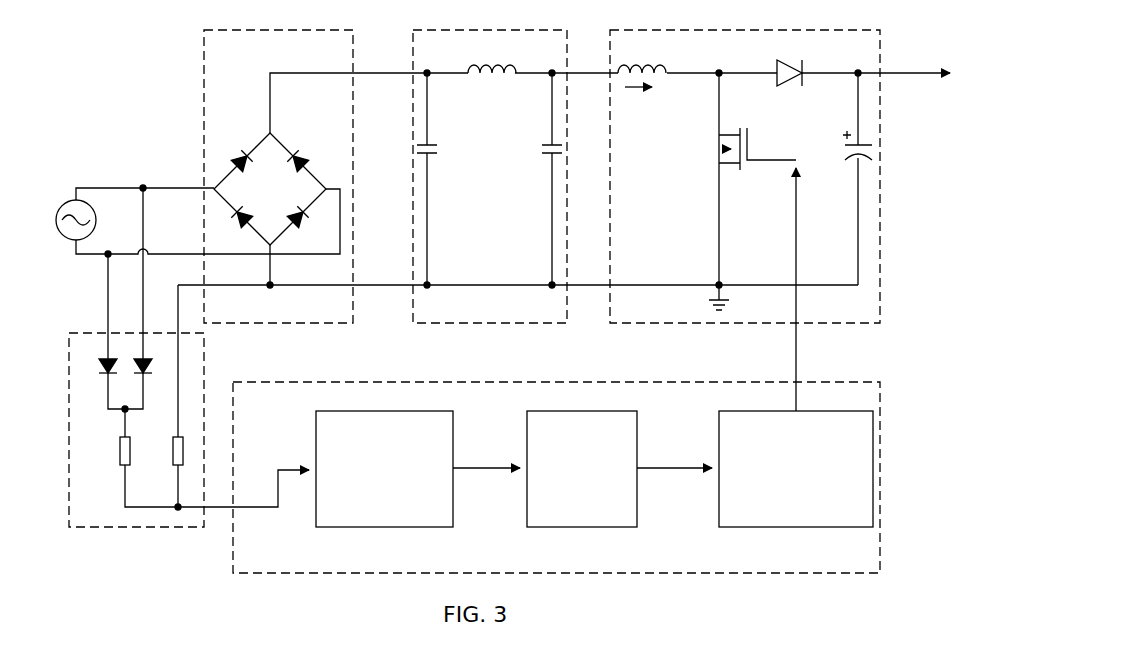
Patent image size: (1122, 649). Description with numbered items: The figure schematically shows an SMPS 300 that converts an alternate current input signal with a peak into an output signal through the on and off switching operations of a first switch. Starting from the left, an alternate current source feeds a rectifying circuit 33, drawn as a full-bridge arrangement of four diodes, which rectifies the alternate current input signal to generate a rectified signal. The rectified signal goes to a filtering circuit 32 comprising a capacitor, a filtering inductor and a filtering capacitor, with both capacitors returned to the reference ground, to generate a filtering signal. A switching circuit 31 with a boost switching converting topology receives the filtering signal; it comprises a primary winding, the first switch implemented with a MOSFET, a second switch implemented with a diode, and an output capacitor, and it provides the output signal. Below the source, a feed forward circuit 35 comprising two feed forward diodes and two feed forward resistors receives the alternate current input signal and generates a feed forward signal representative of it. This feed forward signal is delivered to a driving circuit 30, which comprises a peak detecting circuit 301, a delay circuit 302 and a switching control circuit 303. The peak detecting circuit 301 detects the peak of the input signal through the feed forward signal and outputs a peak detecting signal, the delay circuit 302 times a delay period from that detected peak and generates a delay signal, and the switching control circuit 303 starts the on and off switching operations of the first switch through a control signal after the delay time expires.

The SMPS 300 is at (162, 95).
The rectifying circuit 33 is at (279, 31).
The filtering circuit 32 is at (474, 31).
The switching circuit 31 is at (731, 31).
The feed forward circuit 35 is at (135, 527).
The driving circuit 30 is at (880, 417).
The peak detecting circuit 301 is at (352, 527).
The delay circuit 302 is at (577, 527).
The switching control circuit 303 is at (768, 527).